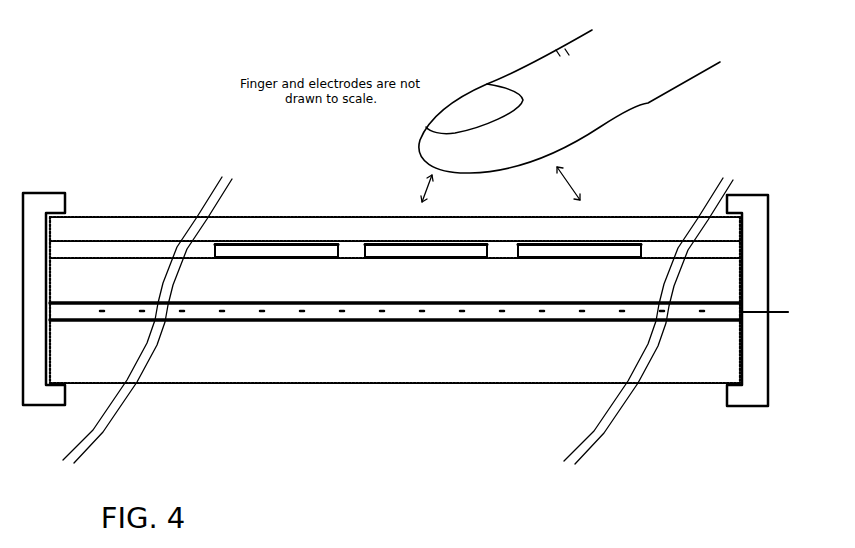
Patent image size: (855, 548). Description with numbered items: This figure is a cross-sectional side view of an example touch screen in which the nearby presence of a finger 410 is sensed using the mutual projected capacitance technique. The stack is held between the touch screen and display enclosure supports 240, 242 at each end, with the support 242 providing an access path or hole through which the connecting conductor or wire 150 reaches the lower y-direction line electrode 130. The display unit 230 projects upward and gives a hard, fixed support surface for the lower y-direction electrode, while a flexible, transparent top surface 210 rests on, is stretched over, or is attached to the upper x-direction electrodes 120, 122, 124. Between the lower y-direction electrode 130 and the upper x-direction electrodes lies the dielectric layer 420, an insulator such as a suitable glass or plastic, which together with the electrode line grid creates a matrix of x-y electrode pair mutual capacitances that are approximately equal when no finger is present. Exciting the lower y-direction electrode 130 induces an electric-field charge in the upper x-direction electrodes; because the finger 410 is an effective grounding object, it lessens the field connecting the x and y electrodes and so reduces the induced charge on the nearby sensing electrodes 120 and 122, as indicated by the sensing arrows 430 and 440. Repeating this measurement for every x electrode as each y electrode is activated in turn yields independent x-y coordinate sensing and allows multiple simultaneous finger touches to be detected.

The upper x-direction electrode 120 is at (644, 248).
The upper x-direction electrode 122 is at (490, 248).
The upper x-direction electrode 124 is at (295, 252).
The lower y-direction line electrode 130 is at (593, 312).
The connecting conductor (wire) 150 is at (780, 311).
The flexible, transparent top surface 210 is at (263, 230).
The display unit 230 is at (251, 357).
The touch screen and display enclosure support 240 is at (47, 204).
The touch screen and display enclosure support 242 is at (749, 203).
The finger 410 is at (648, 105).
The dielectric layer 420 is at (415, 280).
The sensing arrow 430 is at (433, 187).
The sensing arrow 440 is at (570, 185).